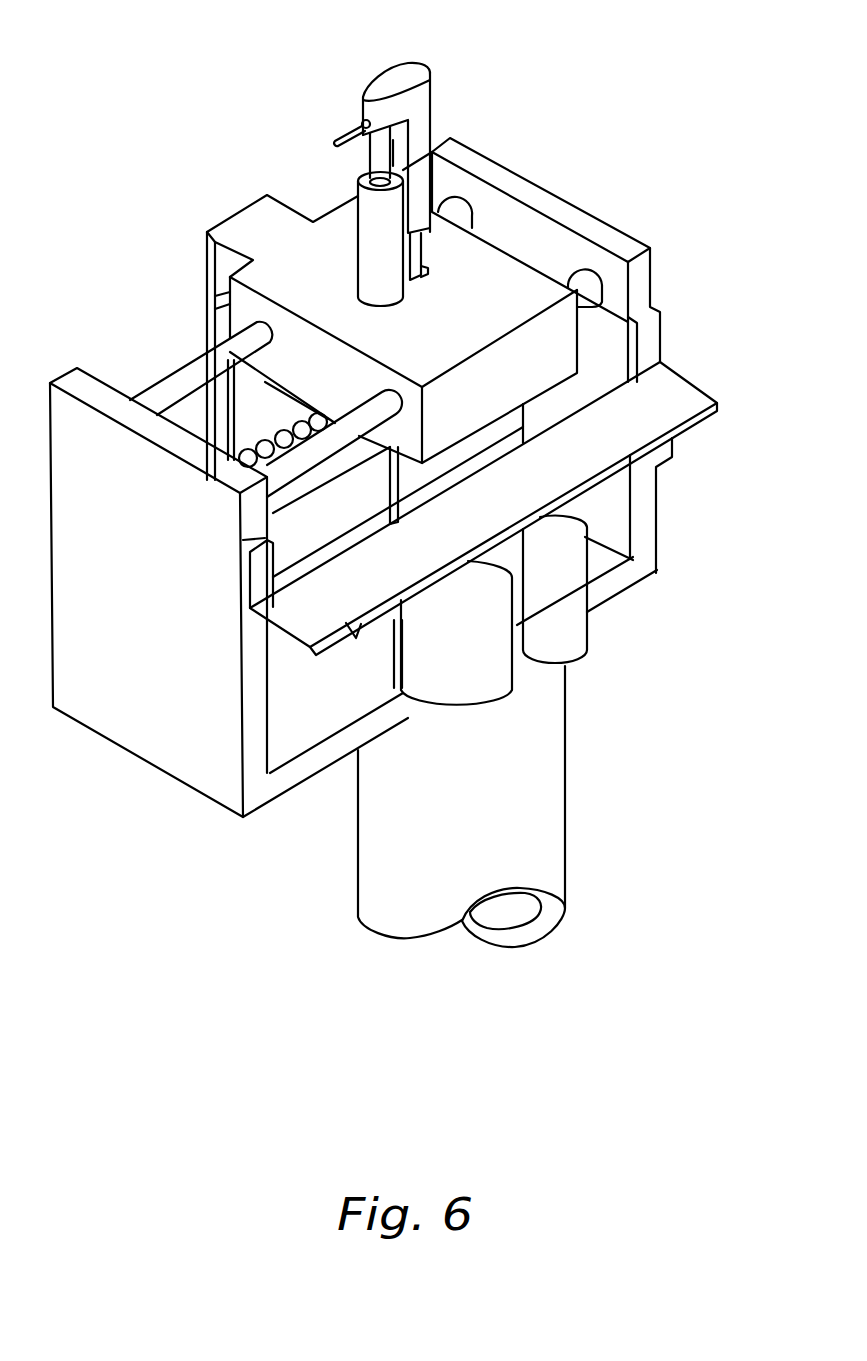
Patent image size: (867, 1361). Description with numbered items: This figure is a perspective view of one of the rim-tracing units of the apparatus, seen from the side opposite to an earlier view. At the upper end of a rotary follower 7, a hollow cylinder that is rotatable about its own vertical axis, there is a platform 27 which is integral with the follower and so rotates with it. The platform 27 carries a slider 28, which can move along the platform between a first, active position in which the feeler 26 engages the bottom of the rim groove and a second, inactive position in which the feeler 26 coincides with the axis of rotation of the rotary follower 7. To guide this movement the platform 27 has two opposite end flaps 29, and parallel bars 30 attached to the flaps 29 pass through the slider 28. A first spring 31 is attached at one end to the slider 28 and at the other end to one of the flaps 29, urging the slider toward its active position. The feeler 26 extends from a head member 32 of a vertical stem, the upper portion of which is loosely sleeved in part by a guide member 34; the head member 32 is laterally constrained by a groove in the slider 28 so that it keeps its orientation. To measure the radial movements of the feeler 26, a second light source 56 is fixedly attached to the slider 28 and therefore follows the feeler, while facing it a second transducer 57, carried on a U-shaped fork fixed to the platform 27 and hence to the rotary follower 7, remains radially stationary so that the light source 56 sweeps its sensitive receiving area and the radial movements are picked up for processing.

The rotary follower 7 is at (402, 902).
The feeler 26 is at (334, 140).
The platform 27 is at (320, 760).
The slider 28 is at (253, 230).
The end flap 29 is at (587, 227).
The parallel bar 30 is at (173, 388).
The first spring 31 is at (272, 445).
The head member 32 is at (382, 90).
The guide member 34 is at (367, 238).
The second light source 56 is at (573, 572).
The second transducer 57 is at (380, 613).